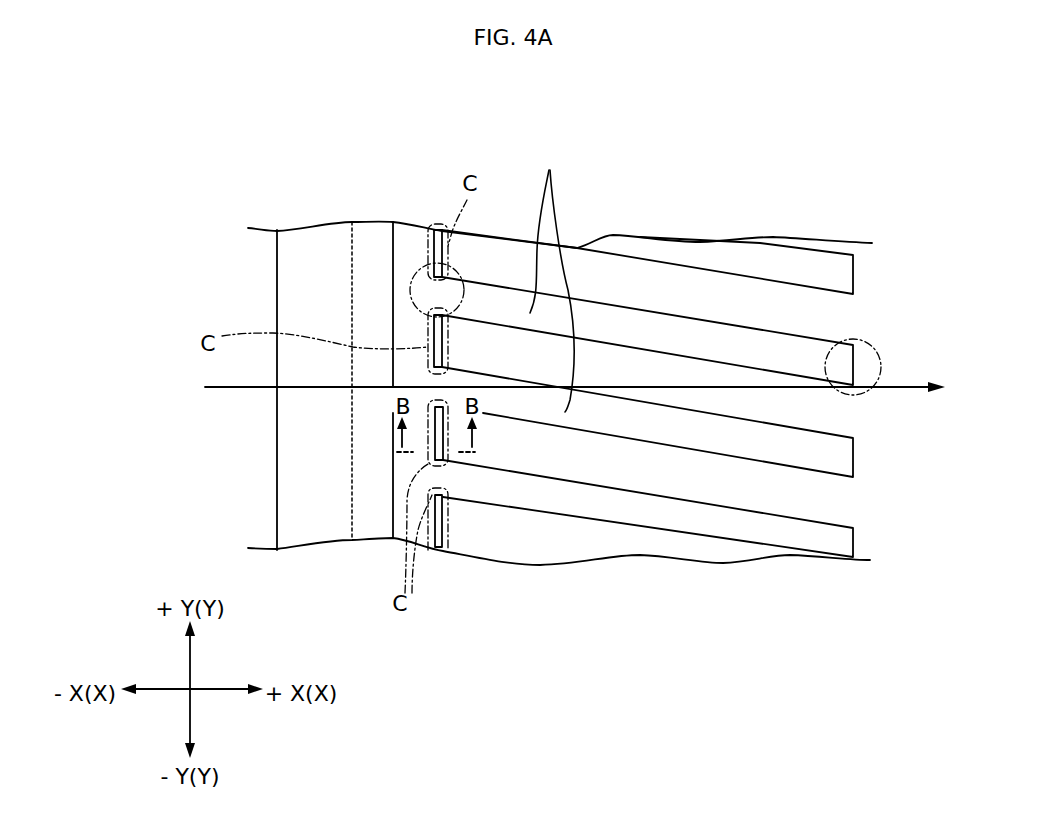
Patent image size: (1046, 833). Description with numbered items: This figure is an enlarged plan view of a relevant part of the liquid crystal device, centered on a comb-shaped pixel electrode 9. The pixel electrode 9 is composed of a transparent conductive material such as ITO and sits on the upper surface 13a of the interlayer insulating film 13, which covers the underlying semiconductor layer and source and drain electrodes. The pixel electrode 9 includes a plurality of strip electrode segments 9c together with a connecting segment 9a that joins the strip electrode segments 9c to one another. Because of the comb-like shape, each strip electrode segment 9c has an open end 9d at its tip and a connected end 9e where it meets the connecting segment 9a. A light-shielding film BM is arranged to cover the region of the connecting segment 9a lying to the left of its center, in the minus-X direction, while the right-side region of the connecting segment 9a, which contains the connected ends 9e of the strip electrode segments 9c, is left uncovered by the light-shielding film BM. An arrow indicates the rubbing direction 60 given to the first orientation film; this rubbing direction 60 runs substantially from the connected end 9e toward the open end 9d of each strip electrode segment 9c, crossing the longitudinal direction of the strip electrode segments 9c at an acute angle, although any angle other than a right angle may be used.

The pixel electrode 9 is at (567, 146).
The connecting segment 9a is at (411, 240).
The strip electrode segment 9c is at (552, 276).
The open end 9d is at (852, 340).
The connected end 9e is at (388, 262).
The interlayer insulating film 13 is at (707, 290).
The upper surface of the interlayer insulating film 13a is at (603, 460).
The rubbing direction 60 is at (900, 388).
The light-shielding film BM is at (292, 268).